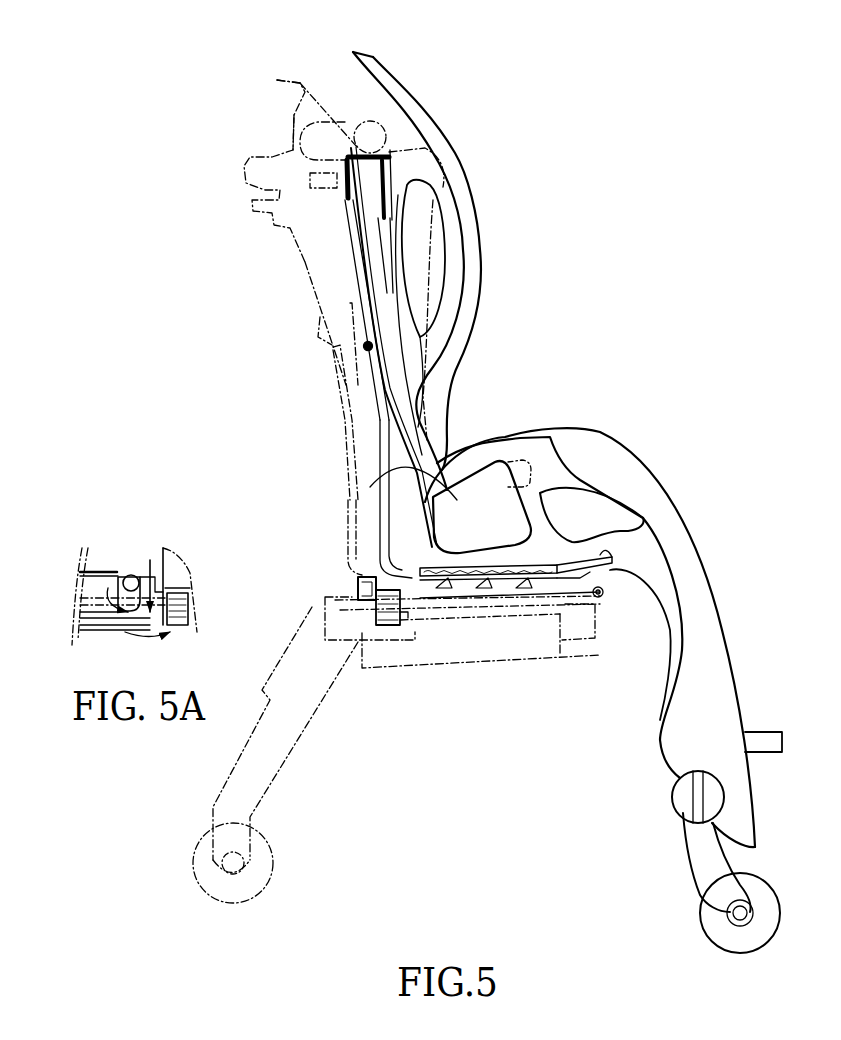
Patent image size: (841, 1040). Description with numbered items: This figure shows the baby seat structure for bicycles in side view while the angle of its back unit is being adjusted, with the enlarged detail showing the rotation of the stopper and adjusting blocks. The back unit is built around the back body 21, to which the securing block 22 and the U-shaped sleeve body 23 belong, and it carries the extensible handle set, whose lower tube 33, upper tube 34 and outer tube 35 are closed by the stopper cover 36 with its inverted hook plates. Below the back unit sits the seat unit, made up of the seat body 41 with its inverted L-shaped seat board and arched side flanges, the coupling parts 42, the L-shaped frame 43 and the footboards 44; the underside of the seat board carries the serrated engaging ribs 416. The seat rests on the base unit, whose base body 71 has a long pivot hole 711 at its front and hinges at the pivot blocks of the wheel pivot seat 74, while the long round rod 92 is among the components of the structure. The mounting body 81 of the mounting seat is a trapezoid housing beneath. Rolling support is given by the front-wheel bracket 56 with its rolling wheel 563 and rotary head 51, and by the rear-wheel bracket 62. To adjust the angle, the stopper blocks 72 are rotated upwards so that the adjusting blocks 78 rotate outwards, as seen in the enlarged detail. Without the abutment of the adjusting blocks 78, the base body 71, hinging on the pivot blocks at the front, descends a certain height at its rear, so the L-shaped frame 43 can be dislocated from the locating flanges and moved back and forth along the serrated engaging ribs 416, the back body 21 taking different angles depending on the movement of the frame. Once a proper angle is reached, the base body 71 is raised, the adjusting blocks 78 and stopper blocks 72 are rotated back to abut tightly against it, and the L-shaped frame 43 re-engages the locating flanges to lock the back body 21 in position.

In FIG. 5, the back body 21 is at (487, 253).
In FIG. 5, the securing block 22 is at (348, 331).
In FIG. 5, the sleeve body 23 is at (348, 291).
In FIG. 5, the lower tube 33 is at (343, 118).
In FIG. 5, the upper tube 34 is at (293, 132).
In FIG. 5, the outer tube 35 is at (288, 81).
In FIG. 5, the stopper cover 36 is at (372, 136).
In FIG. 5, the seat body 41 is at (701, 534).
In FIG. 5, the coupling part 42 is at (490, 495).
In FIG. 5, the L-shaped frame 43 is at (377, 460).
In FIG. 5, the footboard 44 is at (770, 762).
In FIG. 5, the rotary head 51 is at (670, 795).
In FIG. 5, the front-wheel bracket 56 is at (684, 878).
In FIG. 5, the rear-wheel bracket 62 is at (293, 773).
In FIG. 5, the base body 71 is at (575, 602).
In FIG. 5A, the base body 71 is at (92, 584).
In FIG. 5, the stopper block 72 is at (354, 586).
In FIG. 5A, the stopper block 72 is at (137, 572).
In FIG. 5, the wheel pivot seat 74 is at (335, 645).
In FIG. 5, the adjusting block 78 is at (400, 614).
In FIG. 5A, the adjusting block 78 is at (193, 614).
In FIG. 5, the mounting body 81 is at (512, 680).
In FIG. 5, the long round rod 92 is at (606, 553).
In FIG. 5, the serrated engaging ribs 416 is at (443, 585).
In FIG. 5, the rolling wheel 563 is at (729, 938).
In FIG. 5, the long pivot hole 711 is at (600, 600).